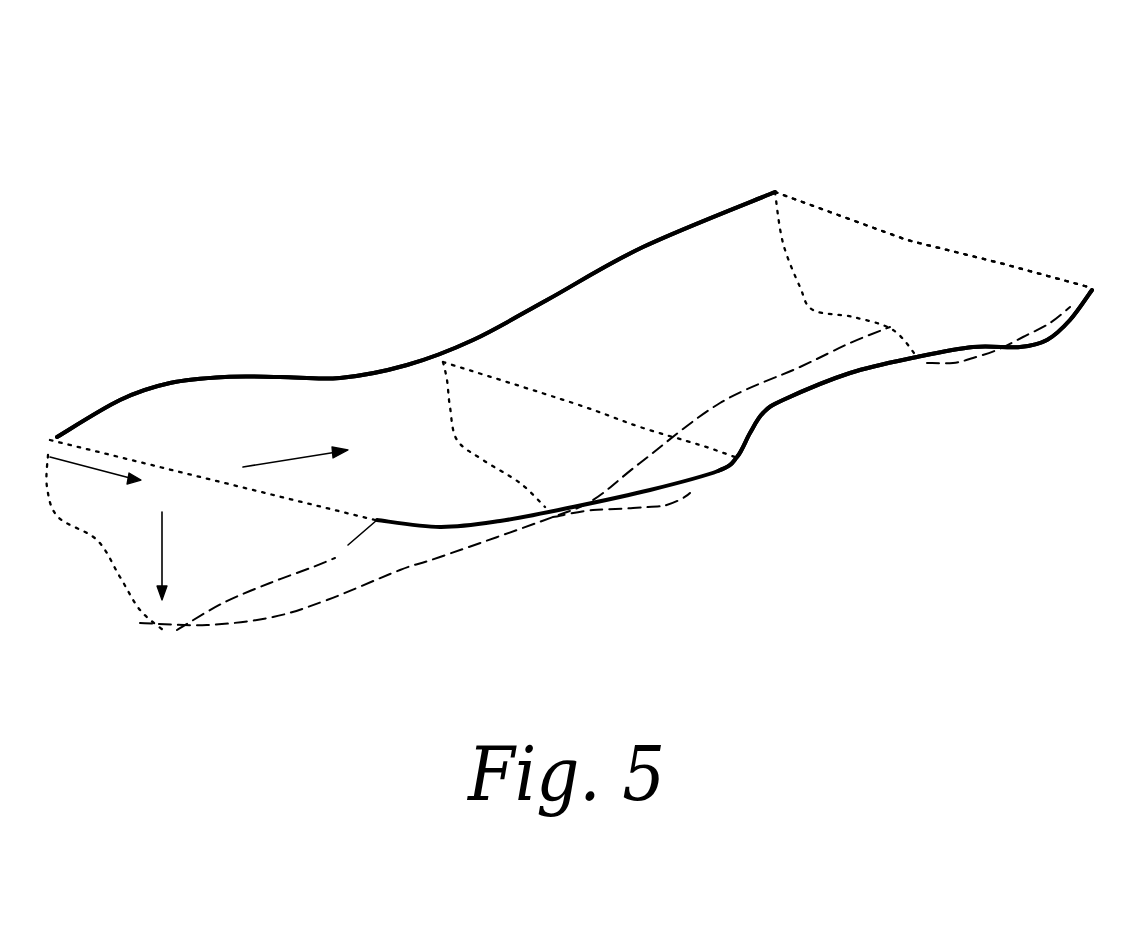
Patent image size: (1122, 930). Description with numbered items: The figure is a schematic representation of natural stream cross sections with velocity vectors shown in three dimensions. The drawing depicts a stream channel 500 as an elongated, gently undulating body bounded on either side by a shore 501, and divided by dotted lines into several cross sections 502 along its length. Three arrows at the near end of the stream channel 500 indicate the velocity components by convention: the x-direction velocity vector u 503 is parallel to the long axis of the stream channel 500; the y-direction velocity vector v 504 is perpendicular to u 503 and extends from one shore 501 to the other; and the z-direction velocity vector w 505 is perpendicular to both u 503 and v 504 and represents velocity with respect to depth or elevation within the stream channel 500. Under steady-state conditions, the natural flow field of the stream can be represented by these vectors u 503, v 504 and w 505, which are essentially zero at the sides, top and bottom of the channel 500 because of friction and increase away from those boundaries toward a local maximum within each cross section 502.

The stream channel 500 is at (268, 137).
The shore 501 is at (341, 377).
The cross section 502 is at (570, 428).
The x-direction velocity vector u 503 is at (272, 462).
The y-direction velocity vector v 504 is at (120, 477).
The z-direction velocity vector w 505 is at (162, 565).